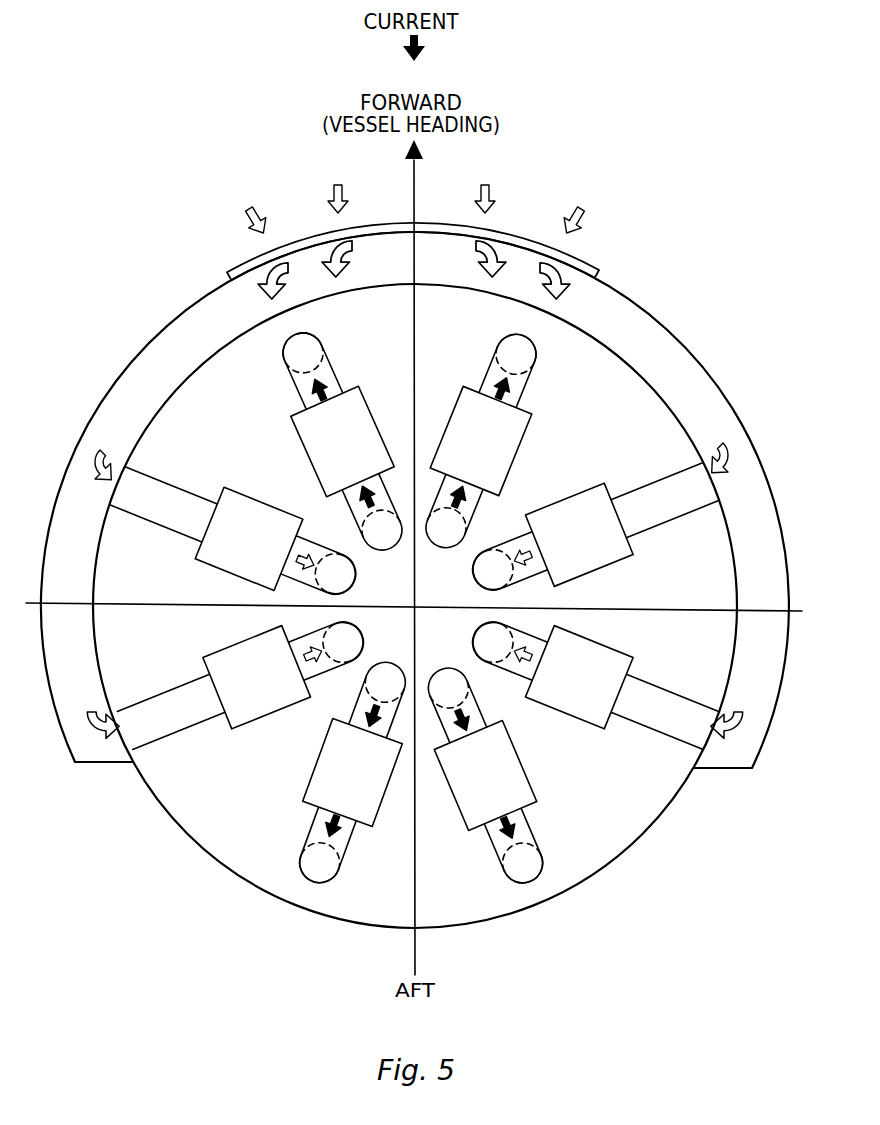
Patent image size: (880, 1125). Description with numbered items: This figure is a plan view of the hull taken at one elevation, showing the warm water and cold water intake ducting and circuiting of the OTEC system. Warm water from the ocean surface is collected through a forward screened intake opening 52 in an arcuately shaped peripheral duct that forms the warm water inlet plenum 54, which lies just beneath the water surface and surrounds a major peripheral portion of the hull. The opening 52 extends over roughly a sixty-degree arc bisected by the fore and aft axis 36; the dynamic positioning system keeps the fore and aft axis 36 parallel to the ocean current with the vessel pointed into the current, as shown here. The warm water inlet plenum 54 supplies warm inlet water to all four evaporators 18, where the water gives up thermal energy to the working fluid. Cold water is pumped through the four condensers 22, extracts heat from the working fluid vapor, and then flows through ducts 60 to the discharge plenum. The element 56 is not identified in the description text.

The evaporator 18 is at (576, 494).
The condenser 22 is at (526, 428).
The fore and aft axis 36 is at (416, 311).
The forward screened intake opening 52 is at (597, 266).
The warm water inlet plenum 54 is at (173, 320).
The strut pivot 56 is at (474, 572).
The duct 60 is at (535, 356).